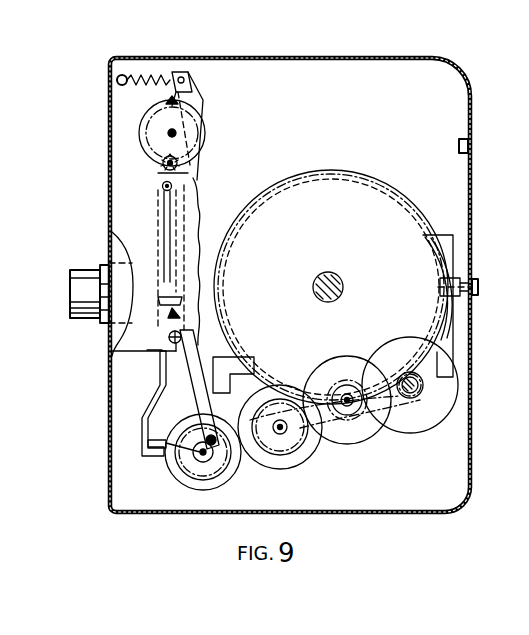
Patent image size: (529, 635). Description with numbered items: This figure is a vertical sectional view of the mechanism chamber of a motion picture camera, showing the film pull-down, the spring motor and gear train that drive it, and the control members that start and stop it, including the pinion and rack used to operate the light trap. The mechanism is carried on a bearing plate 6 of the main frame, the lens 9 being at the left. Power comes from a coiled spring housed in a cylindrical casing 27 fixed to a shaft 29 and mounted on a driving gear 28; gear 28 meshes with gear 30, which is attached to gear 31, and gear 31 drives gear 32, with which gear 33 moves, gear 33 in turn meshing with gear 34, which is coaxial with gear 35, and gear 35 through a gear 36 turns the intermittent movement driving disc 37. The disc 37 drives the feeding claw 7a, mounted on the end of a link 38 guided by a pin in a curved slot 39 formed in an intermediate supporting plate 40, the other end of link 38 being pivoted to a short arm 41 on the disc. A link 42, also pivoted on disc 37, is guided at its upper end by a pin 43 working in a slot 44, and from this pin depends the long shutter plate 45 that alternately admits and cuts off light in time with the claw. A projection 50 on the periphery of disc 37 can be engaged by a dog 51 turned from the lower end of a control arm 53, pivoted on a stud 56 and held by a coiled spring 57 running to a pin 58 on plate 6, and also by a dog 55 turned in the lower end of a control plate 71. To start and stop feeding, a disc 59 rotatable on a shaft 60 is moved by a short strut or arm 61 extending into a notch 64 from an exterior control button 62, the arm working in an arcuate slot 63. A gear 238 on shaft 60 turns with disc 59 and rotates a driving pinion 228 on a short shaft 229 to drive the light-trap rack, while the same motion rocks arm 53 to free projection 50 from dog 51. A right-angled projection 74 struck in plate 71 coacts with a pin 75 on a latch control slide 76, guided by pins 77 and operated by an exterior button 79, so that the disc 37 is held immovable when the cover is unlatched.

The bearing plate 6 is at (290, 285).
The lens 9 is at (101, 293).
The intermediate supporting plate 40 is at (137, 294).
The pin 58 is at (121, 74).
The coiled spring 57 is at (152, 76).
The notch 64 is at (172, 98).
The arcuate slot 63 is at (203, 98).
The control button 62 is at (178, 98).
The short strut or arm 61 is at (168, 103).
The disc 59 is at (140, 118).
The shaft 60 is at (170, 133).
The gear 238 is at (199, 135).
The short shaft 229 is at (179, 162).
The driving pinion 228 is at (188, 173).
The pin 43 is at (163, 185).
The slot 44 is at (164, 202).
The shutter plate 45 is at (166, 222).
The stud 56 is at (200, 250).
The claw 7a is at (180, 298).
The curved slot 39 is at (180, 330).
The link 38 is at (150, 352).
The dog 55 is at (200, 376).
The control arm 53 is at (160, 386).
The link 42 is at (183, 400).
The projection 50 is at (195, 438).
The short arm 41 is at (148, 442).
The dog 51 is at (162, 446).
The gear 36 is at (200, 455).
The intermittent movement driving disc 37 is at (200, 468).
The control plate 71 is at (444, 348).
The cylindrical casing 27 is at (432, 218).
The shaft 29 is at (337, 279).
The latch control slide 76 is at (438, 277).
The driving gear 28 is at (438, 214).
The pins 77 is at (458, 146).
The right-angled projection 74 is at (440, 282).
The pin 75 is at (440, 290).
The button 79 is at (477, 290).
The gear 34 is at (277, 445).
The gear 35 is at (290, 458).
The gear 33 is at (347, 447).
The gear 32 is at (353, 440).
The gear 30 is at (406, 400).
The gear 31 is at (425, 430).